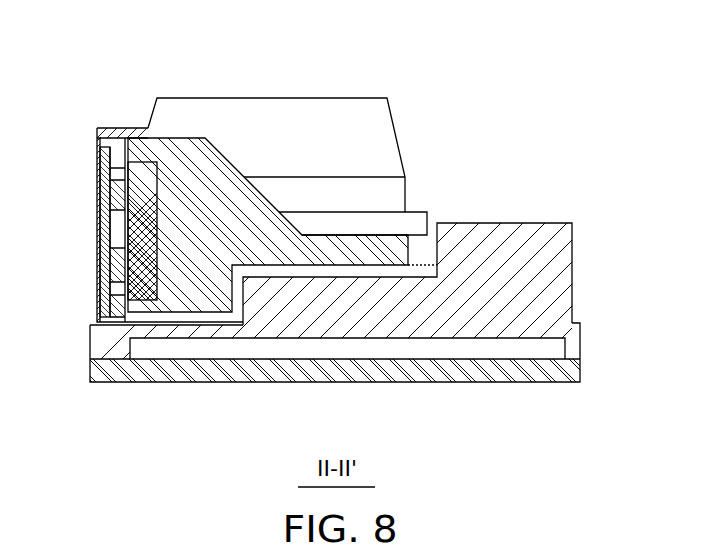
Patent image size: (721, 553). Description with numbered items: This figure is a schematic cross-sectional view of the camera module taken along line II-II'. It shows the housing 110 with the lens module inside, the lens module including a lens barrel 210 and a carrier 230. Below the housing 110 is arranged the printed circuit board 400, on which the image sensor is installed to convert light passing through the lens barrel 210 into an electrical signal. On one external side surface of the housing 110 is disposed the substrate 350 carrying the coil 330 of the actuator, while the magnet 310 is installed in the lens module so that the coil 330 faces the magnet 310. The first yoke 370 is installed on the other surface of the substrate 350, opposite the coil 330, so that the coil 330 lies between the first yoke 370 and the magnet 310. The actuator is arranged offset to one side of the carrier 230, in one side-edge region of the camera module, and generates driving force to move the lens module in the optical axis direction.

The housing 110 is at (552, 278).
The lens barrel 210 is at (280, 120).
The carrier 230 is at (190, 152).
The magnet 310 is at (145, 152).
The coil 330 is at (98, 197).
The substrate 350 is at (100, 242).
The first yoke 370 is at (100, 280).
The printed circuit board 400 is at (215, 366).